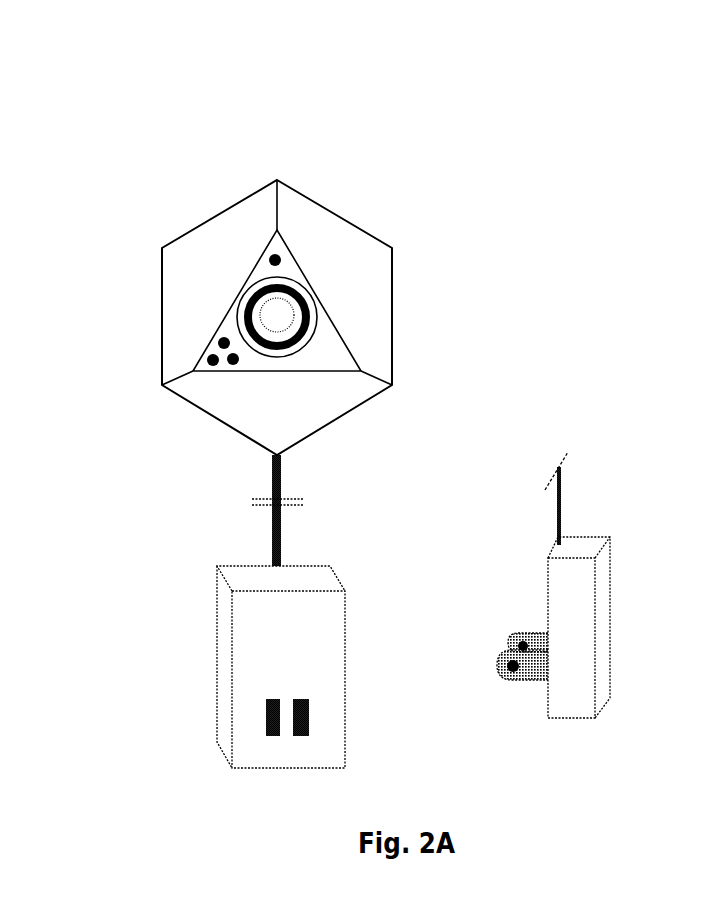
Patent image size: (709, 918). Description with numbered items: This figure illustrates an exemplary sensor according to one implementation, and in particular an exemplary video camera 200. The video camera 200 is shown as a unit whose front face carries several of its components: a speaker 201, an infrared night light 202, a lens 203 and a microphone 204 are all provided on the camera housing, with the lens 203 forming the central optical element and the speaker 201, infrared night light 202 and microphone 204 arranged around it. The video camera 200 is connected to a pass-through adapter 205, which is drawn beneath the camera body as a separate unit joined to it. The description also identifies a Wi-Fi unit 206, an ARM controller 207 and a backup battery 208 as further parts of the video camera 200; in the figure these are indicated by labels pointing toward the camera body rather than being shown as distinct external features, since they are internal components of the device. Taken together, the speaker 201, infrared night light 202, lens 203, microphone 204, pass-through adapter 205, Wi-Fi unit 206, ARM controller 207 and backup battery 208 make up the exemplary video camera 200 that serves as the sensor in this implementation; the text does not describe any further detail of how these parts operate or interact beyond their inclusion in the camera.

The video camera 200 is at (376, 96).
The speaker 201 is at (270, 254).
The infrared night light 202 is at (252, 312).
The lens 203 is at (270, 303).
The microphone 204 is at (223, 357).
The pass-through adapter 205 is at (232, 687).
The Wi-Fi unit 206 is at (465, 215).
The ARM controller 207 is at (465, 266).
The backup battery 208 is at (465, 315).